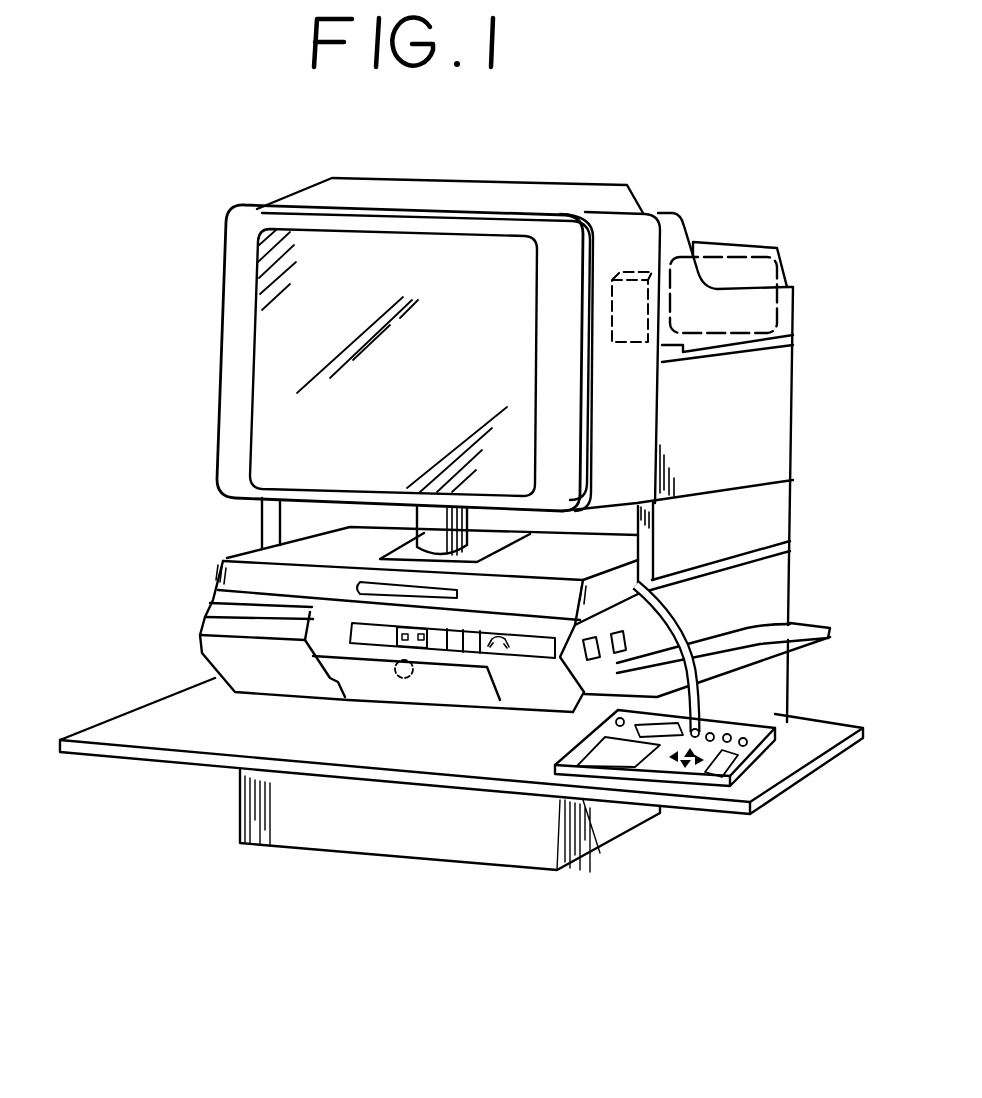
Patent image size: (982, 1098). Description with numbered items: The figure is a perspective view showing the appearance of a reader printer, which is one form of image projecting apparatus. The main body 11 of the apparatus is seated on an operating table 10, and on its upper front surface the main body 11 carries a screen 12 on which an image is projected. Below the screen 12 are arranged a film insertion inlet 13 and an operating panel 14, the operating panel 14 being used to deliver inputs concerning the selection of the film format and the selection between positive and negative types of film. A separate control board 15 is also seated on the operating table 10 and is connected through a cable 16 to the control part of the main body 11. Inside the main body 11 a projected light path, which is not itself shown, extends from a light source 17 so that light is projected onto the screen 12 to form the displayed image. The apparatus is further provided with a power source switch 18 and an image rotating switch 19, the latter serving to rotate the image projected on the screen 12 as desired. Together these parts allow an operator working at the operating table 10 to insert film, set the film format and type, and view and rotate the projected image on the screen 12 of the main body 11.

The operating table 10 is at (128, 740).
The main body of apparatus 11 is at (802, 386).
The screen 12 is at (246, 353).
The film insertion inlet 13 is at (213, 590).
The operating panel 14 is at (349, 641).
The control board 15 is at (756, 714).
The cable 16 is at (695, 622).
The light source 17 is at (404, 700).
The power source switch 18 is at (623, 632).
The image rotating switch 19 is at (590, 661).